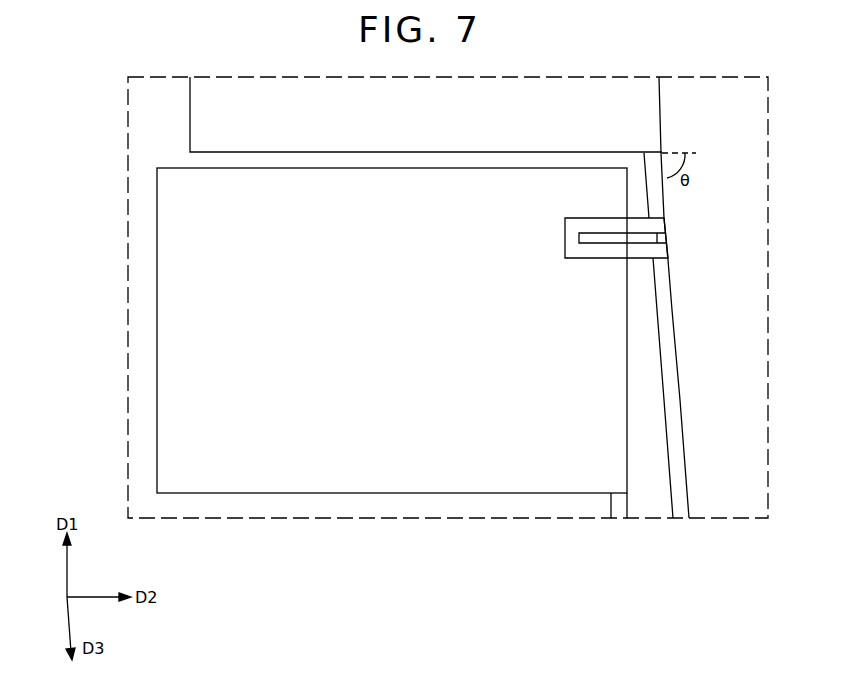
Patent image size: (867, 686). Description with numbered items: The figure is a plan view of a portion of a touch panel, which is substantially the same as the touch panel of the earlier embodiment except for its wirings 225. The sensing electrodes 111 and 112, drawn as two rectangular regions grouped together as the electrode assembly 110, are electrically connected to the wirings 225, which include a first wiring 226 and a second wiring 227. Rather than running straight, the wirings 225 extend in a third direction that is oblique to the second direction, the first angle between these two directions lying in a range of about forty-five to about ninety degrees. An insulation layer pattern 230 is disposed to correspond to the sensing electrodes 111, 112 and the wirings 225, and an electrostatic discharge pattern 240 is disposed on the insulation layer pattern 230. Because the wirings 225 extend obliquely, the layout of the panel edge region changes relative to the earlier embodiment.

The display panel 110 is at (62, 112).
The sensing electrode 111 is at (200, 120).
The sensing electrode 112 is at (168, 216).
The wirings 225 is at (697, 578).
The first wiring 226 is at (682, 510).
The second wiring 227 is at (617, 512).
The insulation layer pattern 230 is at (568, 220).
The electrostatic discharge pattern 240 is at (590, 242).